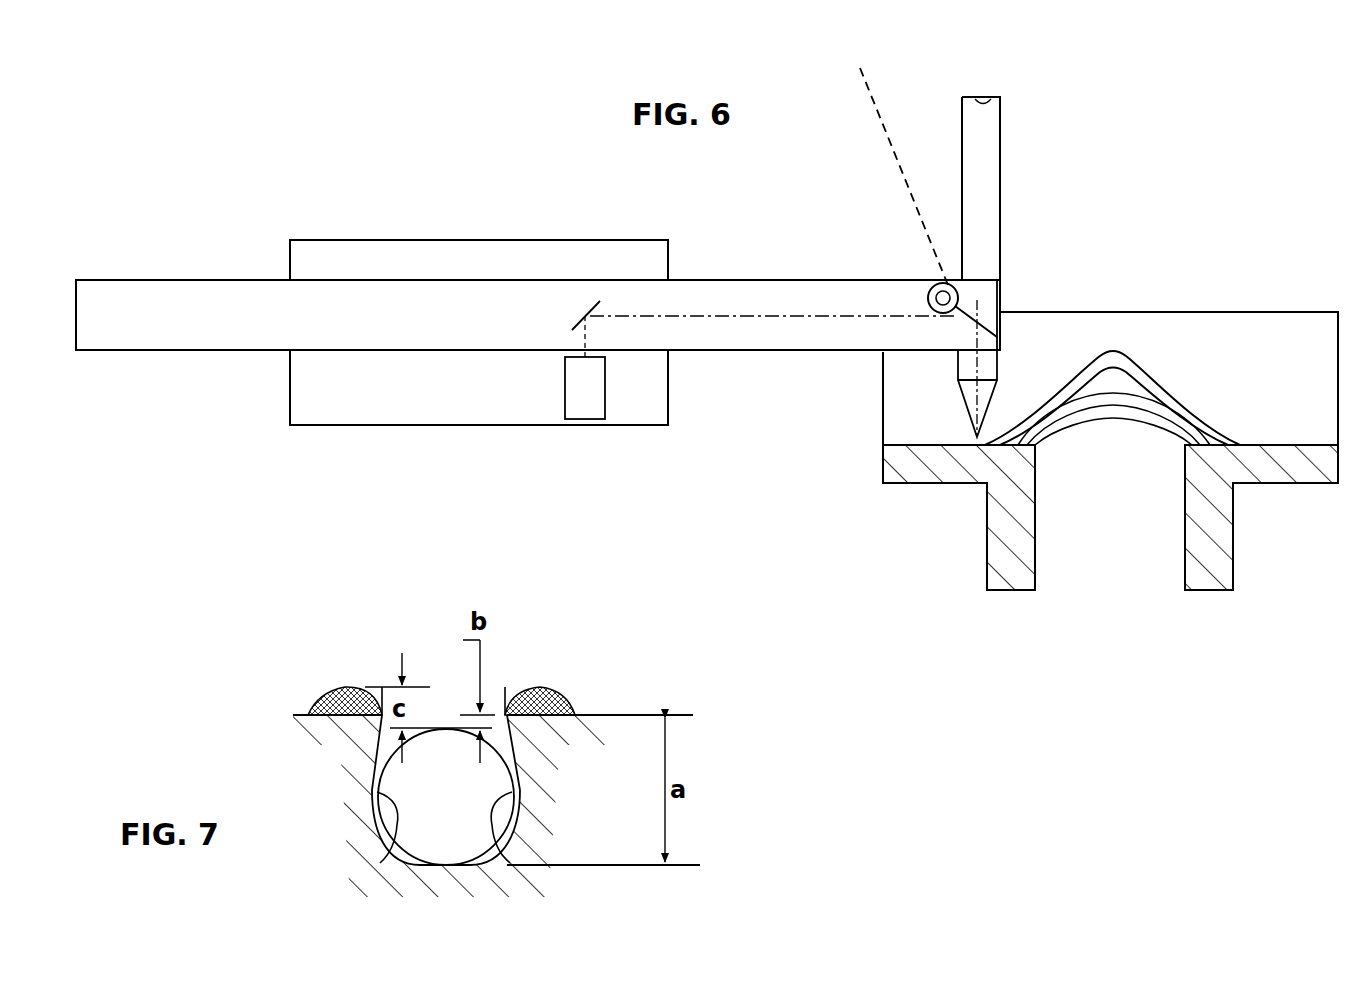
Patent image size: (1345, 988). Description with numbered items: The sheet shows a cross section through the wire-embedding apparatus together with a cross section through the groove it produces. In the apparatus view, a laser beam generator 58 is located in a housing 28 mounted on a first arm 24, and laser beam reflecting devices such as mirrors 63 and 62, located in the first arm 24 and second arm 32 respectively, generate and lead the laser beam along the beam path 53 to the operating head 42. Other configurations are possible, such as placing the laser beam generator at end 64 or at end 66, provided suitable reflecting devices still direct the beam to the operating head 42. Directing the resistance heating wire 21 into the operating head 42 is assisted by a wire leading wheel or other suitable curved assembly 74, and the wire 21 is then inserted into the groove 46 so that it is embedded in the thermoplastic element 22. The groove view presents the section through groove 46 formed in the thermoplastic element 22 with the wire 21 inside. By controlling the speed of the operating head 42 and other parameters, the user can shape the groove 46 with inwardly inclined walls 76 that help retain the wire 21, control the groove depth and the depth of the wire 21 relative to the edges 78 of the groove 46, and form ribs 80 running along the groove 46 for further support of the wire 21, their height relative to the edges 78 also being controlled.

In FIG. 6, the end 64 is at (92, 324).
In FIG. 6, the housing 28 is at (435, 395).
In FIG. 6, the laser beam generator 58 is at (598, 403).
In FIG. 6, the laser beam reflecting device 63 is at (588, 307).
In FIG. 6, the optical axis 53 is at (800, 316).
In FIG. 6, the first arm 24 is at (783, 280).
In FIG. 6, the second arm 32 is at (993, 150).
In FIG. 6, the end 66 is at (985, 100).
In FIG. 6, the wire leading wheel 74 is at (928, 288).
In FIG. 6, the laser beam reflecting device 62 is at (980, 300).
In FIG. 6, the operating head 42 is at (975, 405).
In FIG. 6, the resistance heating wire 21 is at (872, 97).
In FIG. 7, the resistance heating wire 21 is at (456, 820).
In FIG. 6, the thermoplastic element 22 is at (1123, 322).
In FIG. 7, the thermoplastic element 22 is at (608, 848).
In FIG. 6, the groove 46 is at (1160, 375).
In FIG. 7, the groove 46 is at (494, 638).
In FIG. 7, the inwardly inclined walls 76 is at (380, 858).
In FIG. 7, the edges 78 is at (381, 700).
In FIG. 7, the ribs 80 is at (345, 690).